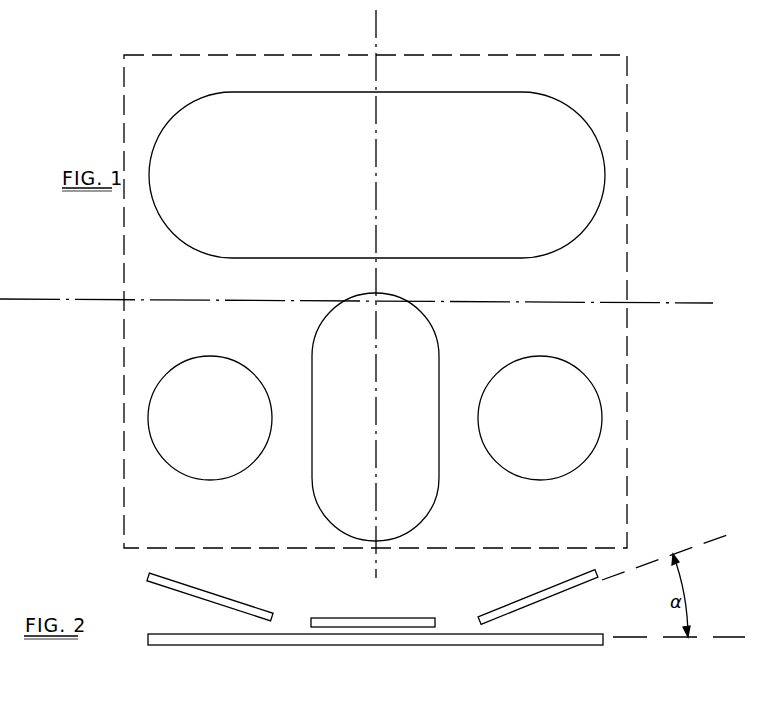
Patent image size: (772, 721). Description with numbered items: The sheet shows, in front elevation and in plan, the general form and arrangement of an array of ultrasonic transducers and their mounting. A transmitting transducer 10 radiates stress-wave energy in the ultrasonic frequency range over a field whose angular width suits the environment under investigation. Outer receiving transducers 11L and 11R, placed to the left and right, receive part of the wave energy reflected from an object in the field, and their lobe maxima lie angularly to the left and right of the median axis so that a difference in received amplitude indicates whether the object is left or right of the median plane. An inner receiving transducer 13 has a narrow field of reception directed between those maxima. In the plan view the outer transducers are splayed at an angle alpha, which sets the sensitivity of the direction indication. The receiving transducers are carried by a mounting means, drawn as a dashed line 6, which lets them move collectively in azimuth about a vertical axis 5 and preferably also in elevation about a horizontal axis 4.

In FIG. 1, the horizontal axis 4 is at (68, 301).
In FIG. 1, the vertical axis 5 is at (378, 30).
In FIG. 1, the mounting means 6 is at (627, 166).
In FIG. 1, the transmitting transducer 10 is at (433, 331).
In FIG. 2, the transmitting transducer 10 is at (375, 618).
In FIG. 1, the right outer receiving transducer 11R is at (166, 459).
In FIG. 2, the right outer receiving transducer 11R is at (225, 604).
In FIG. 1, the left outer receiving transducer 11L is at (590, 462).
In FIG. 2, the left outer receiving transducer 11L is at (538, 597).
In FIG. 1, the inner receiving transducer 13 is at (413, 92).
In FIG. 2, the inner receiving transducer 13 is at (377, 645).